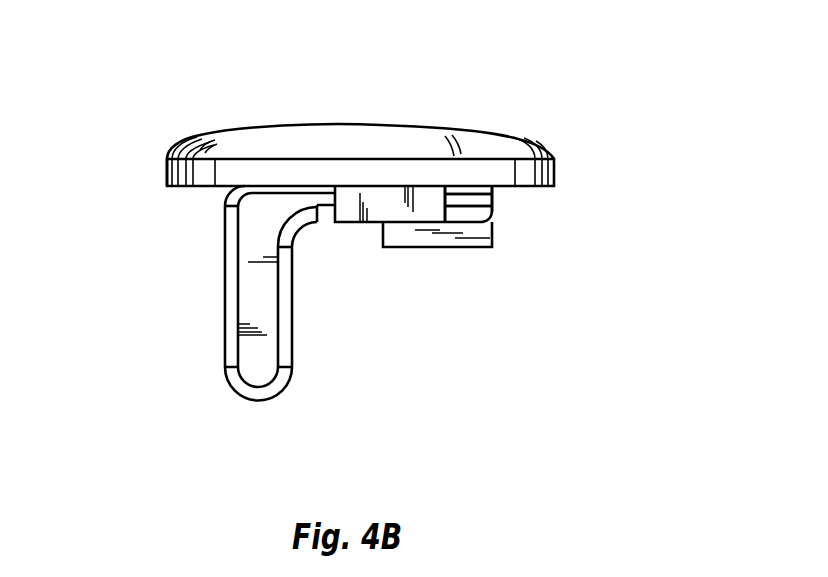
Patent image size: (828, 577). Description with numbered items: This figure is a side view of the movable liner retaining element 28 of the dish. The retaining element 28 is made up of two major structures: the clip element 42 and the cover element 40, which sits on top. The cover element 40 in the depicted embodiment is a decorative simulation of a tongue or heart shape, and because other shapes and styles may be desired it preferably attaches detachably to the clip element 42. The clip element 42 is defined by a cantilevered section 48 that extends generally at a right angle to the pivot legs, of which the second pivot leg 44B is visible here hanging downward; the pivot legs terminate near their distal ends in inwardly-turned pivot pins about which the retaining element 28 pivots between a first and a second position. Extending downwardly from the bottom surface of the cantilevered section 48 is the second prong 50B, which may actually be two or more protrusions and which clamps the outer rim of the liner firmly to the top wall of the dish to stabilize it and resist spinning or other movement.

The movable liner retaining element 28 is at (577, 103).
The cover element 40 is at (282, 126).
The clip element 42 is at (170, 290).
The second pivot leg 44B is at (252, 363).
The cantilevered section 48 is at (492, 200).
The second prong 50B is at (462, 248).